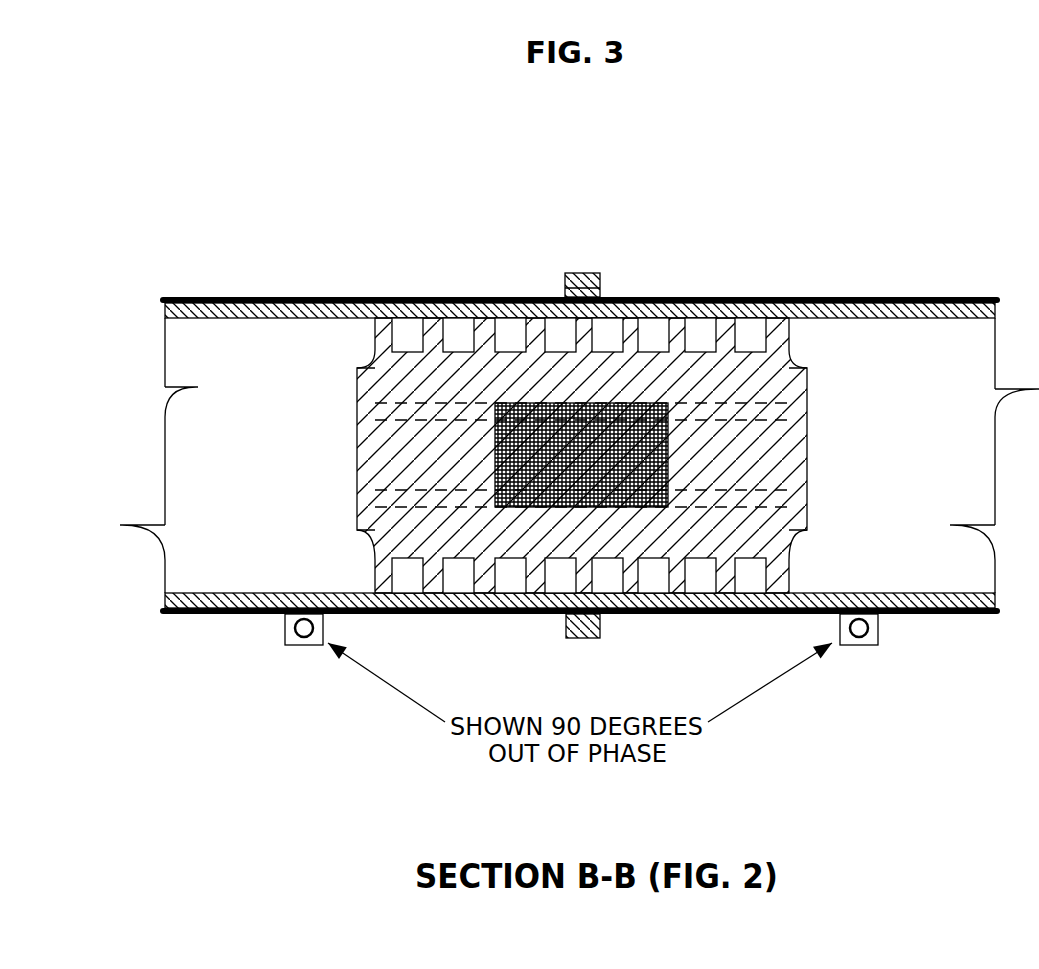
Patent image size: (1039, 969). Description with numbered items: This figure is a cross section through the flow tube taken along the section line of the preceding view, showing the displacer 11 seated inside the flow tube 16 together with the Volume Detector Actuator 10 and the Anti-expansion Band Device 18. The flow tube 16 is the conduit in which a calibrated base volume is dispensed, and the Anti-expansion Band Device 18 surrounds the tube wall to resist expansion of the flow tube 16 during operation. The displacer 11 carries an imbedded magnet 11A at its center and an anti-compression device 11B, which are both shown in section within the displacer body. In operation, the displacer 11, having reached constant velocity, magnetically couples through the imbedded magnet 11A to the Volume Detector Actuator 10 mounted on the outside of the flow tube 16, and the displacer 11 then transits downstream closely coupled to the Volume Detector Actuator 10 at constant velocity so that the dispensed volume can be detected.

The Volume Detector Actuator 10 is at (582, 270).
The displacer 11 is at (373, 472).
The imbedded magnet 11A is at (593, 423).
The anti-compression device 11B is at (417, 410).
The flow tube 16 is at (887, 315).
The Anti-expansion Band Device 18 is at (695, 297).